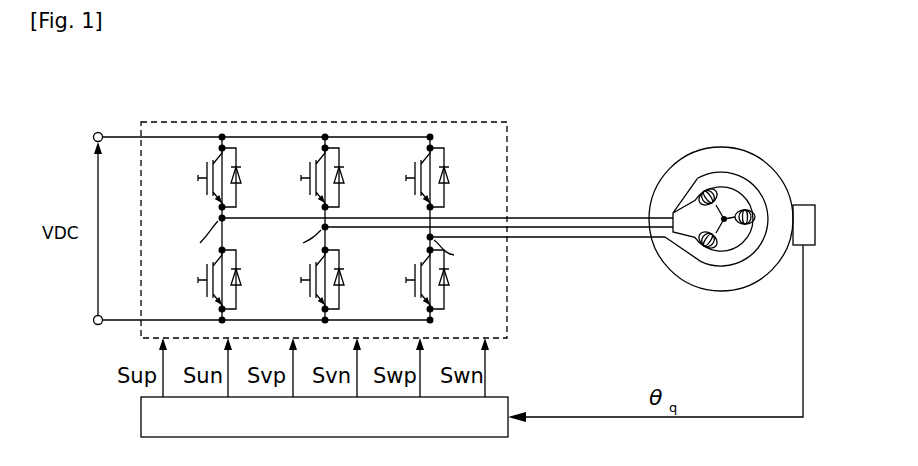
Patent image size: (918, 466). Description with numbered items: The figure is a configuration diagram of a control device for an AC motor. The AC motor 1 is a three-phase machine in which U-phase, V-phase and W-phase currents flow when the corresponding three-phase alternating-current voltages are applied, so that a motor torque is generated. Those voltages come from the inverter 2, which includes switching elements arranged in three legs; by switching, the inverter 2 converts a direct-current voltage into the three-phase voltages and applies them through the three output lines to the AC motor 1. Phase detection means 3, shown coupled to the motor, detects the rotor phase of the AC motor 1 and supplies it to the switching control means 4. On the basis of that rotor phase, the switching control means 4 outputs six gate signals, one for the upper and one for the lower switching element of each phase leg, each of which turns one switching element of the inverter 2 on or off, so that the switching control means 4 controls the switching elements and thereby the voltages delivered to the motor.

The AC motor 1 is at (763, 157).
The inverter 2 is at (325, 121).
The phase detection means 3 is at (797, 205).
The switching control means 4 is at (508, 397).